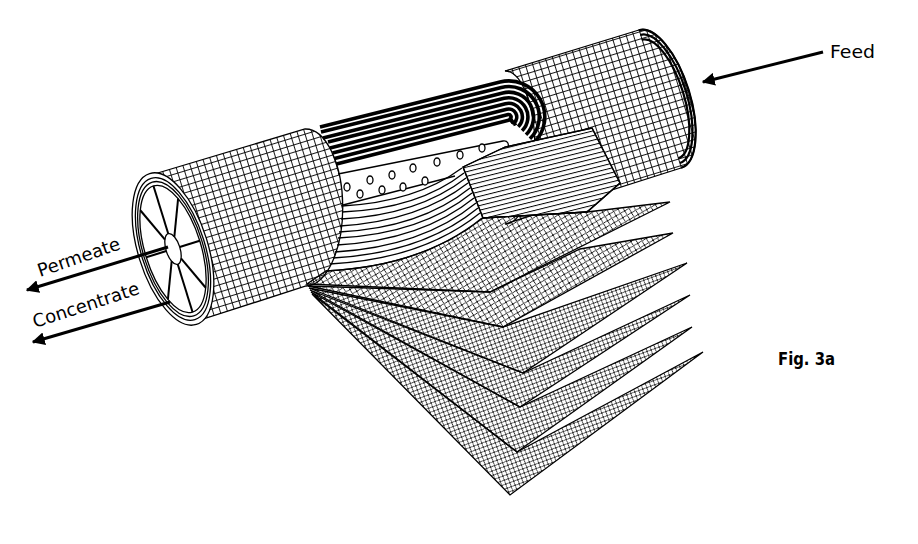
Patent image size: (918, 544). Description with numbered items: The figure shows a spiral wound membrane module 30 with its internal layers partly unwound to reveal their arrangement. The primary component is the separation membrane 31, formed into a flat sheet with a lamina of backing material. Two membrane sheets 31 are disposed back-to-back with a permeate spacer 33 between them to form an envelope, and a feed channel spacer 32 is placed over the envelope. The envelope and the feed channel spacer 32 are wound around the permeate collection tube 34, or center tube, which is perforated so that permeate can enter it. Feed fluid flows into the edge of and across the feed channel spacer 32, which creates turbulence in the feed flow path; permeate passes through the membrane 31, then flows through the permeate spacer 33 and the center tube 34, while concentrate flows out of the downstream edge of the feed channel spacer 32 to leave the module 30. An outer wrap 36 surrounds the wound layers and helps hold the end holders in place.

The spiral wound membrane module 30 is at (160, 100).
The separation membrane 31 is at (678, 234).
The feed channel spacer 32 is at (672, 197).
The permeate spacer 33 is at (407, 322).
The permeate collection tube 34 is at (427, 168).
The outer wrap 36 is at (455, 443).